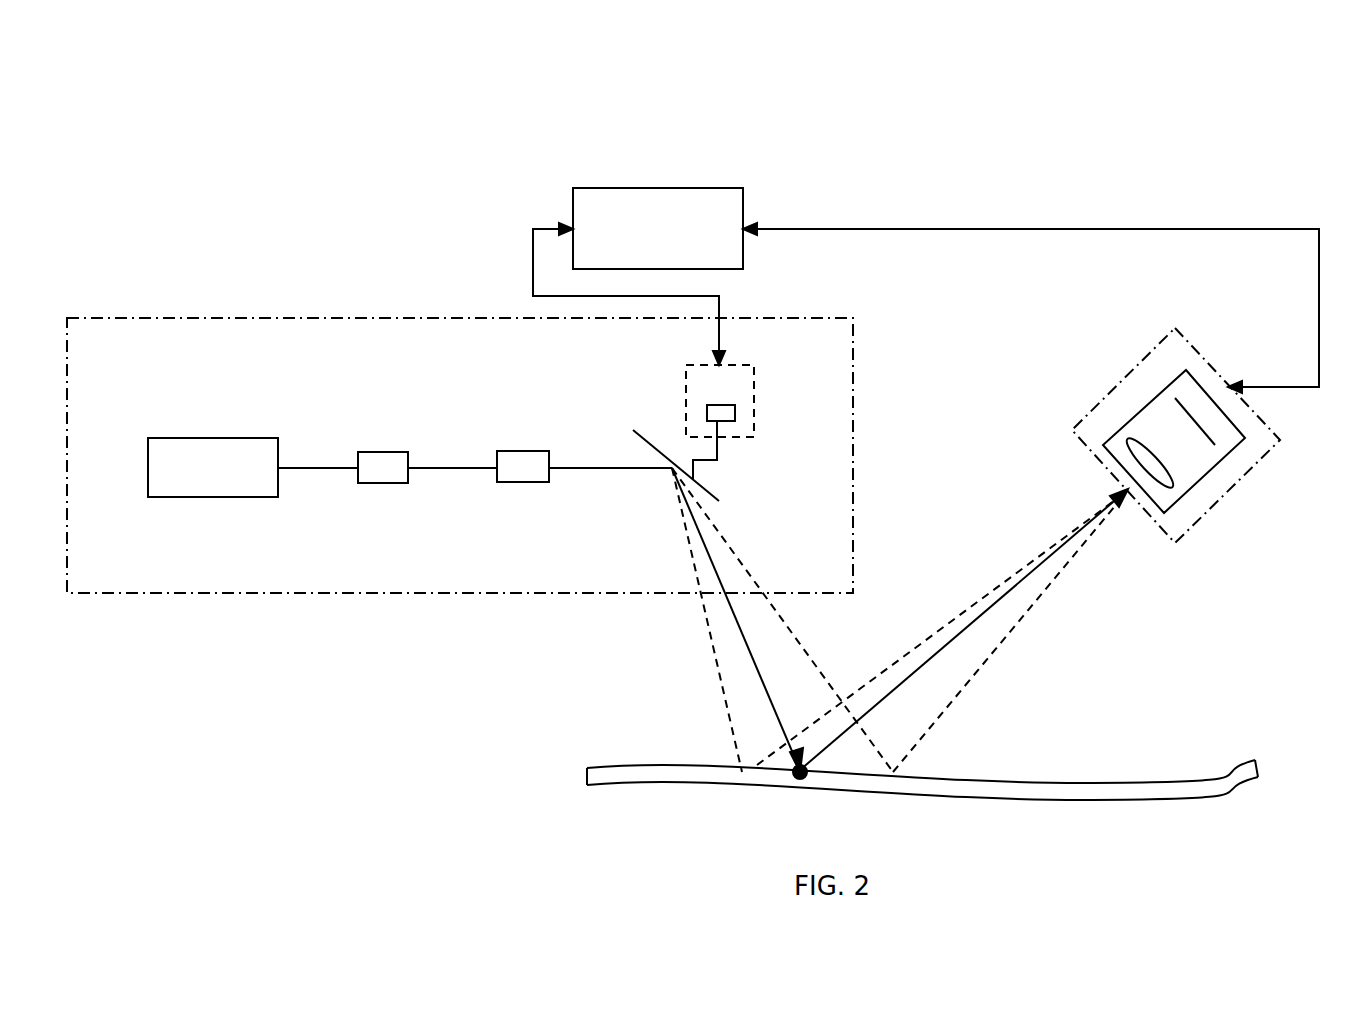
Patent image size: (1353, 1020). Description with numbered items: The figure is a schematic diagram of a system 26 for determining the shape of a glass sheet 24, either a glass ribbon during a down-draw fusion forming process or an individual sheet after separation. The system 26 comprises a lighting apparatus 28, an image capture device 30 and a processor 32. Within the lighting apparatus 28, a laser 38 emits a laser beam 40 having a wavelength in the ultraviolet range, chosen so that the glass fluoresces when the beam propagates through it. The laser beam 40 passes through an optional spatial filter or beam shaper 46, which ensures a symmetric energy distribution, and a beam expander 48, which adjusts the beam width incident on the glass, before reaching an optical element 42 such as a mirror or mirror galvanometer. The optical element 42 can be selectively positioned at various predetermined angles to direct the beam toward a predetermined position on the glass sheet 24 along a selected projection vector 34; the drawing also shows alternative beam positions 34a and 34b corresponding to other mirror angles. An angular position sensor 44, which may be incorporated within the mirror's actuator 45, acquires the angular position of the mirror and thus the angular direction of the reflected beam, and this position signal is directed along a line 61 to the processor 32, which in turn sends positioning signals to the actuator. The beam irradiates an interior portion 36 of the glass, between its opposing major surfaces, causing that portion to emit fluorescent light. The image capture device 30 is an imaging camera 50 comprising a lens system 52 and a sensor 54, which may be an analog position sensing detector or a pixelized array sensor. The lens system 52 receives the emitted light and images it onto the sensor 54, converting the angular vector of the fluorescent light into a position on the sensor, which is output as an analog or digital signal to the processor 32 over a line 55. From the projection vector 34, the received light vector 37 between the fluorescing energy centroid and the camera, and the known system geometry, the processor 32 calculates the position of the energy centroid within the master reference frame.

The glass sheet 24 is at (1112, 803).
The system 26 is at (870, 150).
The lighting apparatus 28 is at (193, 593).
The image capture device 30 is at (1253, 465).
The processor 32 is at (713, 188).
The projection vector 34 is at (740, 630).
The laser beam alternate position 34a is at (725, 703).
The laser beam alternate position 34b is at (800, 647).
The interior portion 36 is at (800, 780).
The received light vector 37 is at (982, 613).
The laser 38 is at (207, 497).
The laser beam 40 is at (310, 463).
The optical element 42 is at (710, 488).
The angular position sensor 44 is at (707, 411).
The actuator 45 is at (754, 398).
The spatial filter or beam shaper 46 is at (382, 452).
The beam expander 48 is at (523, 450).
The imaging camera 50 is at (1140, 410).
The lens system 52 is at (1173, 470).
The sensor 54 is at (1187, 417).
The line 55 is at (1038, 228).
The line 61 is at (533, 267).